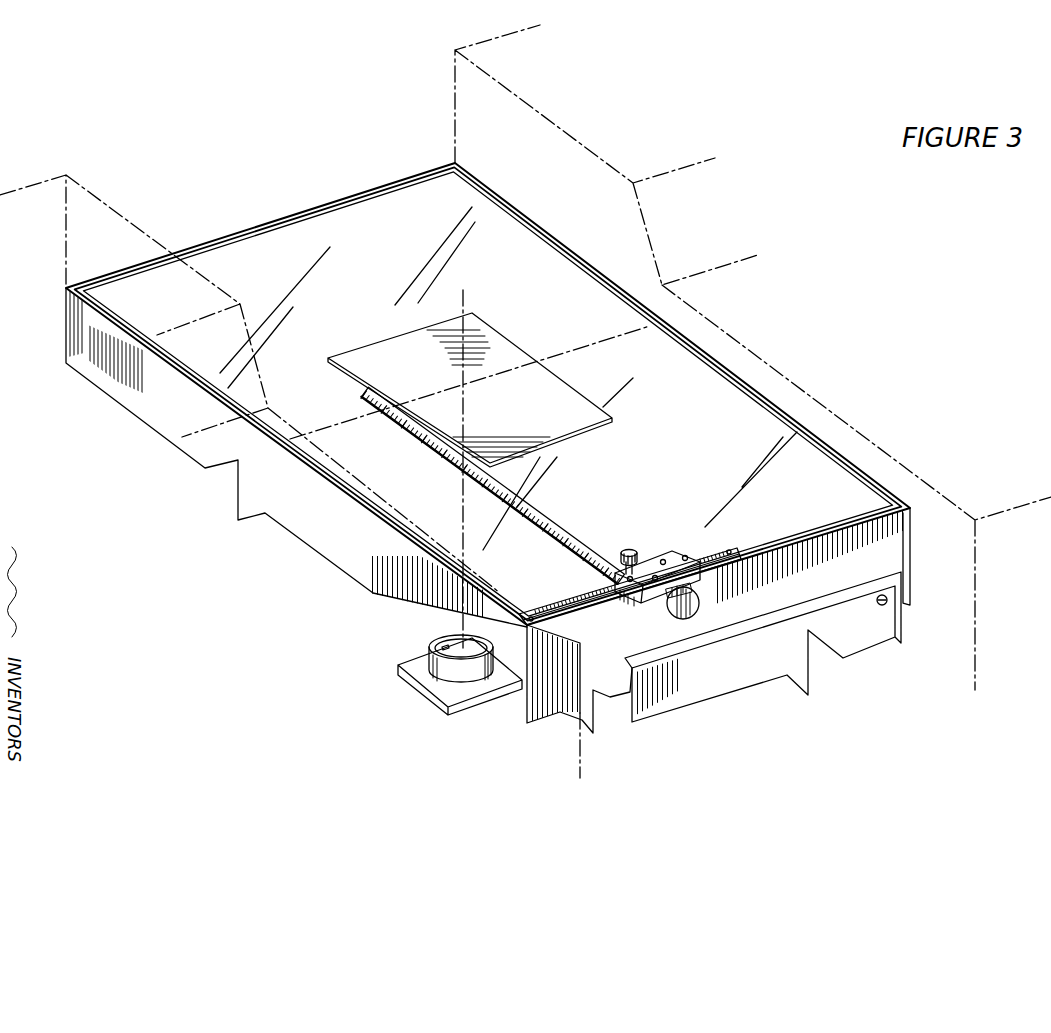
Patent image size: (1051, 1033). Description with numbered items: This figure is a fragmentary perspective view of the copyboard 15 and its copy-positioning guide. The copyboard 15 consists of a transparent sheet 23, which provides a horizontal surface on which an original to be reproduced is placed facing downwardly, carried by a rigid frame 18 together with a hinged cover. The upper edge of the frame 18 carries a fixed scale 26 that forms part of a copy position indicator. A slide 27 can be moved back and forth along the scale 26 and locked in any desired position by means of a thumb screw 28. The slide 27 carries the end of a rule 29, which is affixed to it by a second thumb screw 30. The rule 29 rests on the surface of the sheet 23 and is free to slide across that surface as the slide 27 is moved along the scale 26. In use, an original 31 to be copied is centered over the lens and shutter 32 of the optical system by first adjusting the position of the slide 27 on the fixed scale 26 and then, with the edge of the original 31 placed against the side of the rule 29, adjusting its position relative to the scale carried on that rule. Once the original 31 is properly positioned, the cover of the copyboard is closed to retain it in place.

The copyboard 15 is at (103, 262).
The rigid frame 18 is at (887, 557).
The transparent sheet 23 is at (400, 227).
The fixed scale 26 is at (597, 594).
The slide 27 is at (655, 602).
The thumb screw 28 is at (688, 619).
The rule 29 is at (531, 509).
The thumb screw 30 is at (631, 552).
The original 31 is at (492, 348).
The lens and shutter 32 is at (428, 639).